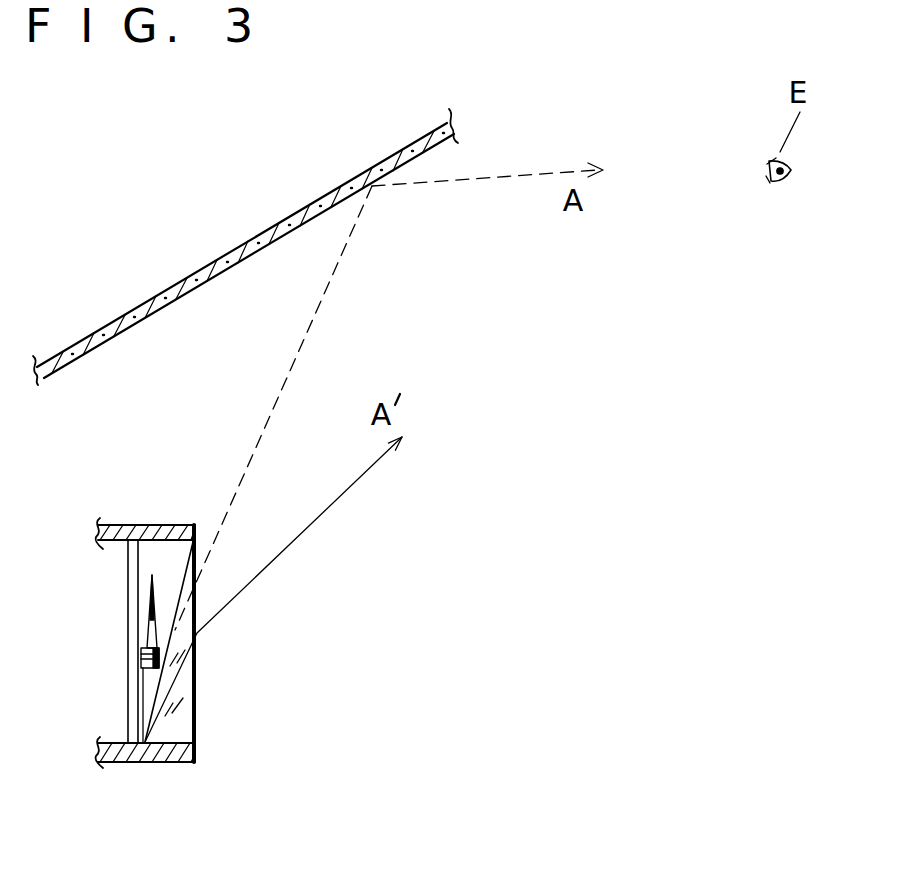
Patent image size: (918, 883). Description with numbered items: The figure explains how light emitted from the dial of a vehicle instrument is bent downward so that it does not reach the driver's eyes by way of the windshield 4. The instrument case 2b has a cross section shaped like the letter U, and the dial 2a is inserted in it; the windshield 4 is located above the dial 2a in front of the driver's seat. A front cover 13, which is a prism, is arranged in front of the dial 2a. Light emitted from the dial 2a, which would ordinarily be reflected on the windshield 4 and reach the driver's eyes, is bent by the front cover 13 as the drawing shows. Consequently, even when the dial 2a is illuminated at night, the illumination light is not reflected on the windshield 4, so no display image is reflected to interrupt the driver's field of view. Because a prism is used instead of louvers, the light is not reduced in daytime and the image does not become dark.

The windshield 4 is at (339, 181).
The dial 2a is at (128, 583).
The instrument case 2b is at (137, 762).
The front cover 13 is at (187, 713).